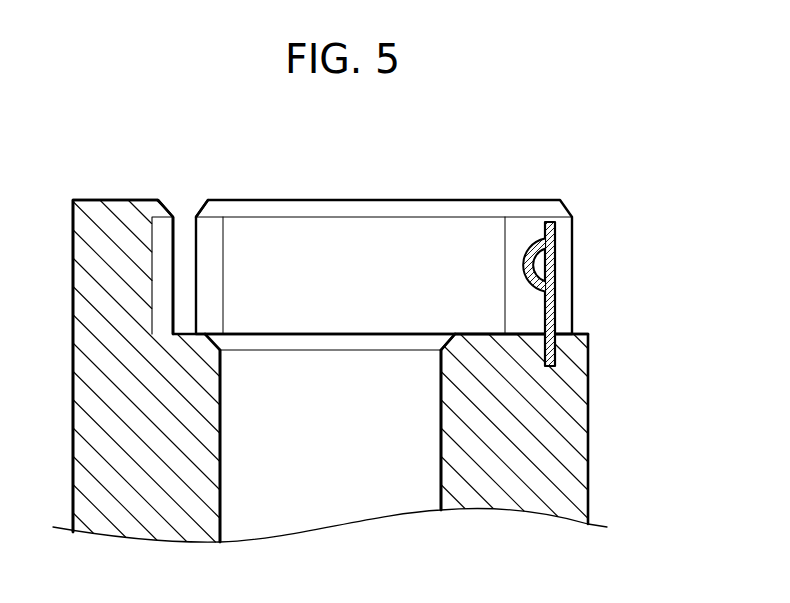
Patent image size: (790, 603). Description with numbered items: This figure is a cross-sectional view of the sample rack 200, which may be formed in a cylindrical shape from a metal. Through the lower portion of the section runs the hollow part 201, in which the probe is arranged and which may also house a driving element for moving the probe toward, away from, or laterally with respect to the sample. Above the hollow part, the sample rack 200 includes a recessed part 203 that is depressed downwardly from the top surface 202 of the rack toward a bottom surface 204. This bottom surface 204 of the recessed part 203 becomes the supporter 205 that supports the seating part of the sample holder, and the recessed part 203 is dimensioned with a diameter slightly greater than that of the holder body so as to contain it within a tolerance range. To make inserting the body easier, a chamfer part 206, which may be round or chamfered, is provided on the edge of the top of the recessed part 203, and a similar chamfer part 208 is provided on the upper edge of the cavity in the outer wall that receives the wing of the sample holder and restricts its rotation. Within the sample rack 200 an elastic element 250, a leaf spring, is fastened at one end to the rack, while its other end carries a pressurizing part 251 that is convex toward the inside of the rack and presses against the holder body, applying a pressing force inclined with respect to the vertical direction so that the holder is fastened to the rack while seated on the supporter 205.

The sample rack 200 is at (589, 471).
The hollow part 201 is at (358, 446).
The top surface 202 is at (88, 200).
The recessed part 203 is at (345, 283).
The bottom surface 204 is at (497, 309).
The supporter 205 is at (487, 335).
The chamfer part 206 is at (210, 207).
The chamfer part 208 is at (152, 212).
The elastic element 250 is at (556, 278).
The pressurizing part 251 is at (525, 268).